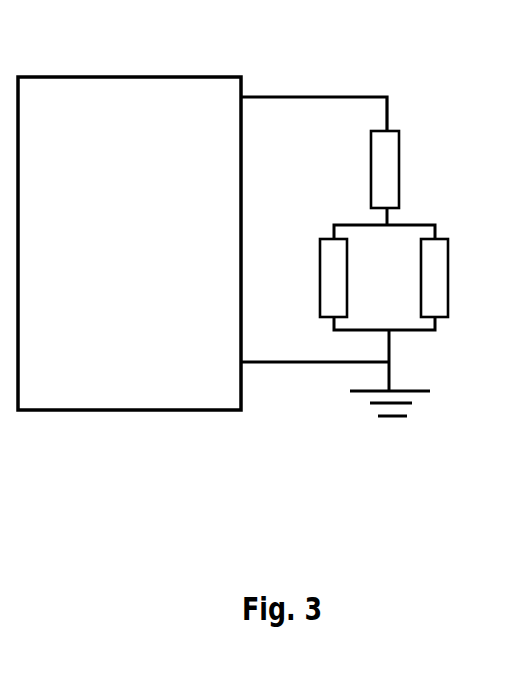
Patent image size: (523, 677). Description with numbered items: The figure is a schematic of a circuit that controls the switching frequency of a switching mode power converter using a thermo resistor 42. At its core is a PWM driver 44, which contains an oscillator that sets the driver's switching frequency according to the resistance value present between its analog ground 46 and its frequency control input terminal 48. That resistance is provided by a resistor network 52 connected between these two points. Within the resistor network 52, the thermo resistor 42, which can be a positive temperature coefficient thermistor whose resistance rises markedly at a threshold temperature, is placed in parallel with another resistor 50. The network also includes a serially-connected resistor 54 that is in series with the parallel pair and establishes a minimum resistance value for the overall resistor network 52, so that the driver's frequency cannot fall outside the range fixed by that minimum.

The thermo resistor 42 is at (448, 278).
The PWM driver 44 is at (129, 243).
The analog ground 46 is at (253, 363).
The frequency control input terminal 48 is at (292, 87).
The resistor 50 is at (318, 278).
The resistor network 52 is at (390, 252).
The serially-connected resistor 54 is at (370, 178).